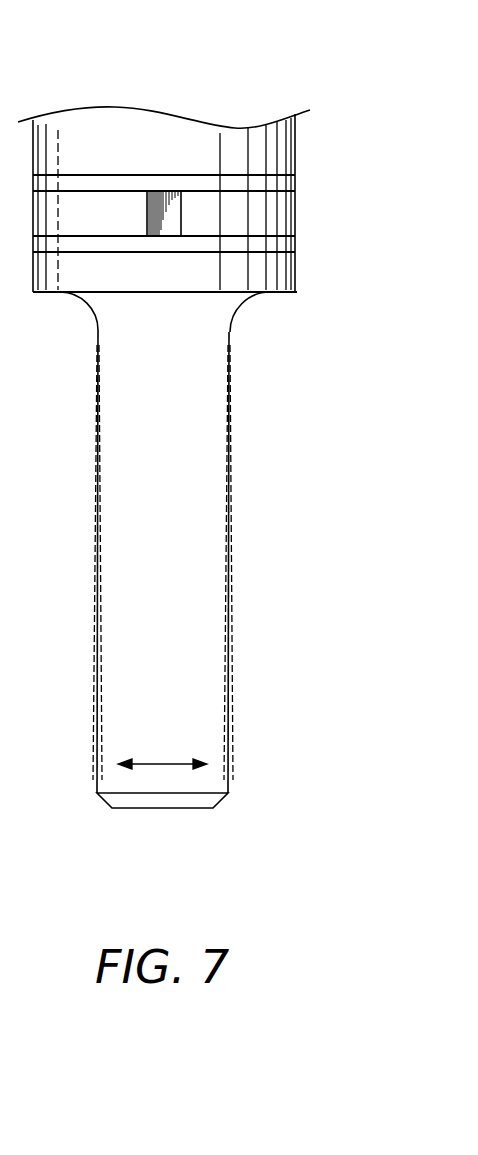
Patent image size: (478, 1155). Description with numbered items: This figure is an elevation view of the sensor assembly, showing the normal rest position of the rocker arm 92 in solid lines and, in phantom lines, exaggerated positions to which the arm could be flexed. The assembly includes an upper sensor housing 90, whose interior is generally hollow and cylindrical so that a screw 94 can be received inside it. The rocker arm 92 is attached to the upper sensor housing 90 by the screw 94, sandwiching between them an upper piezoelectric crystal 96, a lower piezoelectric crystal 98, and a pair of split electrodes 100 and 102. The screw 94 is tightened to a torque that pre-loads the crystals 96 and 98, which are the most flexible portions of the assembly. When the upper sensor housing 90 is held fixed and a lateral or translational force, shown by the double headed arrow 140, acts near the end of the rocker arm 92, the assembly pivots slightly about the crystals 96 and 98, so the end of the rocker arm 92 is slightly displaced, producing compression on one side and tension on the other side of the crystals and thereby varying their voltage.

The upper sensor housing 90 is at (83, 126).
The rocker arm 92 is at (178, 585).
The screw 94 is at (213, 830).
The upper piezoelectric crystal 96 is at (200, 181).
The lower piezoelectric crystal 98 is at (117, 240).
The split electrode 100 is at (98, 207).
The split electrode 102 is at (233, 210).
The double headed arrow 140 is at (157, 764).